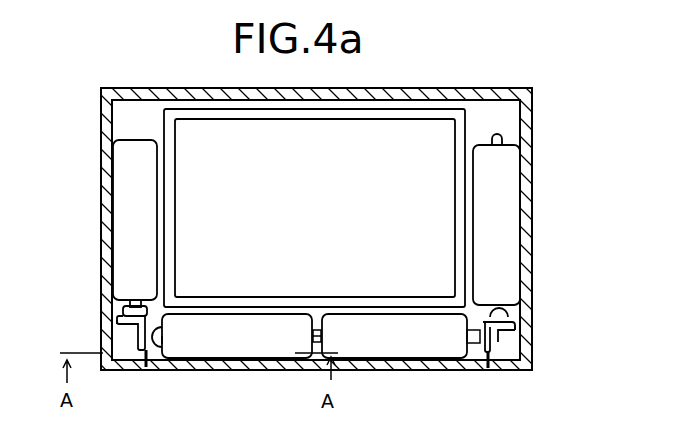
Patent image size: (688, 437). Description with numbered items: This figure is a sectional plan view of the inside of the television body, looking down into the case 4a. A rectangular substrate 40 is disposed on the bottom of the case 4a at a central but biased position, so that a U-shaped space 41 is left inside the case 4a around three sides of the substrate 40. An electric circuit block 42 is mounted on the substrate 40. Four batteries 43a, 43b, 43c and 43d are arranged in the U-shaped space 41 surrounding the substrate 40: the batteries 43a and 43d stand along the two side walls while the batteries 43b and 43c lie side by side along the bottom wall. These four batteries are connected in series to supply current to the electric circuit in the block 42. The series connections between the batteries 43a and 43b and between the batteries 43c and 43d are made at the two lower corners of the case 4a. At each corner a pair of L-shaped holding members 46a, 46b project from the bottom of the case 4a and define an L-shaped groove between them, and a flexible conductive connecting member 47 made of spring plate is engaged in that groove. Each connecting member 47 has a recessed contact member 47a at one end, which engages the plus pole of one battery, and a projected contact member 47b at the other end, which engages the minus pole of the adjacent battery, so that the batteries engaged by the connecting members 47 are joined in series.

The case 4a is at (525, 105).
The substrate 40 is at (427, 116).
The U-shaped space 41 is at (510, 132).
The electric circuit block 42 is at (356, 128).
The battery 43a is at (118, 220).
The battery 43b is at (252, 350).
The battery 43c is at (404, 352).
The battery 43d is at (515, 242).
The L-shaped holding member 46a is at (133, 342).
The L-shaped holding member 46b is at (155, 349).
The flexible conductive connecting member 47 is at (147, 365).
The recessed contact member 47a is at (122, 311).
The projected contact member 47b is at (168, 346).